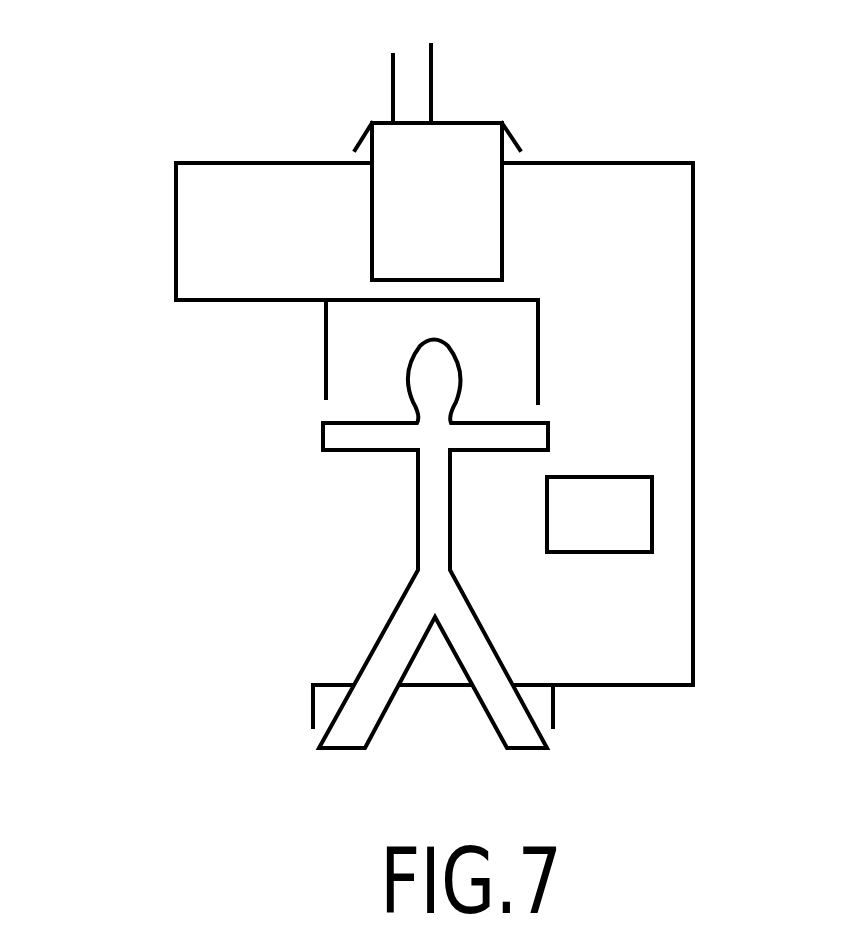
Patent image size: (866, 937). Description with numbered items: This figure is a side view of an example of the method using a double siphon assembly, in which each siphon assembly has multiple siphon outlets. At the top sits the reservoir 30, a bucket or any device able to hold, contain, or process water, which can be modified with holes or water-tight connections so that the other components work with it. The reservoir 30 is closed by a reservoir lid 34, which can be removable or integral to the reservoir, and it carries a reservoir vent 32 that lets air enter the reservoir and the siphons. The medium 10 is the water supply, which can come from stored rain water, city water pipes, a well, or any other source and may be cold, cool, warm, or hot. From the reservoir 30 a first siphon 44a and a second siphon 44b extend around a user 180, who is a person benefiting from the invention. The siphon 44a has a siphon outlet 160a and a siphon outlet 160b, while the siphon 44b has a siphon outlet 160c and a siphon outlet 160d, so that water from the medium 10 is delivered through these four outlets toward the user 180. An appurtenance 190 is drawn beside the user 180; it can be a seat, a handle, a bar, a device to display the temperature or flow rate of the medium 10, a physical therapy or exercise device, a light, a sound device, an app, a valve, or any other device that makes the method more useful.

The medium 10 is at (431, 82).
The reservoir vent 32 is at (393, 90).
The reservoir lid 34 is at (512, 130).
The reservoir 30 is at (437, 201).
The siphon 44a is at (176, 246).
The second siphon 44b is at (693, 618).
The siphon outlet 160a is at (326, 398).
The siphon outlet 160b is at (545, 398).
The siphon outlet 160c is at (313, 727).
The siphon outlet 160d is at (553, 727).
The user 180 is at (435, 508).
The appurtenance 190 is at (599, 514).